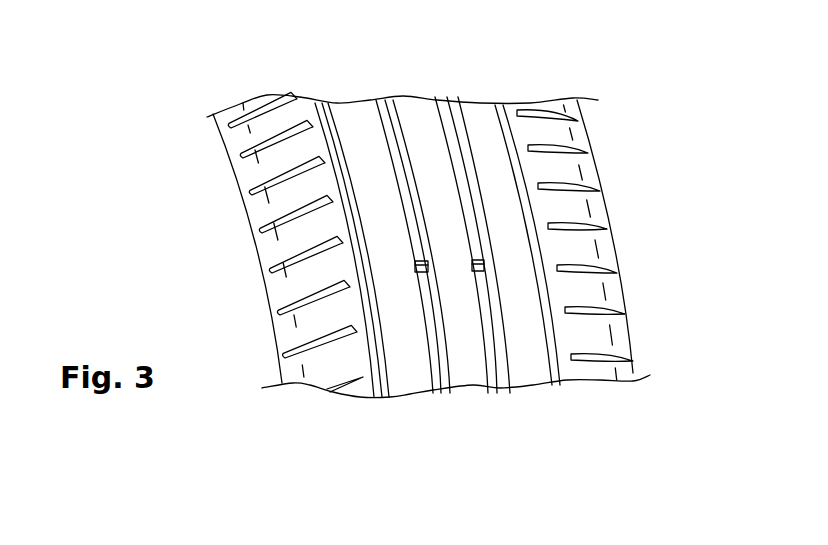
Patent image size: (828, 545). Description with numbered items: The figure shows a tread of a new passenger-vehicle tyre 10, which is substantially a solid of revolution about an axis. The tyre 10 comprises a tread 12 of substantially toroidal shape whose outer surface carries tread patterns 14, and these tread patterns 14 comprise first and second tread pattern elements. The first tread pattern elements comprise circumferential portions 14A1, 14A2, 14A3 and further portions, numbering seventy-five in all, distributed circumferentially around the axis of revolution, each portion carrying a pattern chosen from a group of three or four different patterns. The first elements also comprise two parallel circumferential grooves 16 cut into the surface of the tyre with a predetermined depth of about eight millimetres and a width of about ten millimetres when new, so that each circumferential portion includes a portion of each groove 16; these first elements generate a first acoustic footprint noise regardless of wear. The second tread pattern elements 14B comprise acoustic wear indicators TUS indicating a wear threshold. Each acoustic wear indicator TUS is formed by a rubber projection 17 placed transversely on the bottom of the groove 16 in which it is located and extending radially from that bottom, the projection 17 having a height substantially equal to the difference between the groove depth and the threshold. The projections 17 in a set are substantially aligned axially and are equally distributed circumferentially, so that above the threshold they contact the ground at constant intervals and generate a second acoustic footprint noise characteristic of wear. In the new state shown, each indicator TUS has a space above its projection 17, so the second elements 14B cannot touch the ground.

The tyre 10 is at (303, 73).
The tread 12 is at (352, 110).
The tread patterns 14 is at (522, 111).
The second tread pattern elements 14B is at (445, 252).
The circumferential portion 14A1 is at (620, 168).
The circumferential portion 14A2 is at (206, 203).
The circumferential portion 14A3 is at (238, 351).
The circumferential grooves 16 is at (440, 380).
The rubber projection 17 is at (415, 266).
The acoustic wear indicator TUS is at (514, 271).